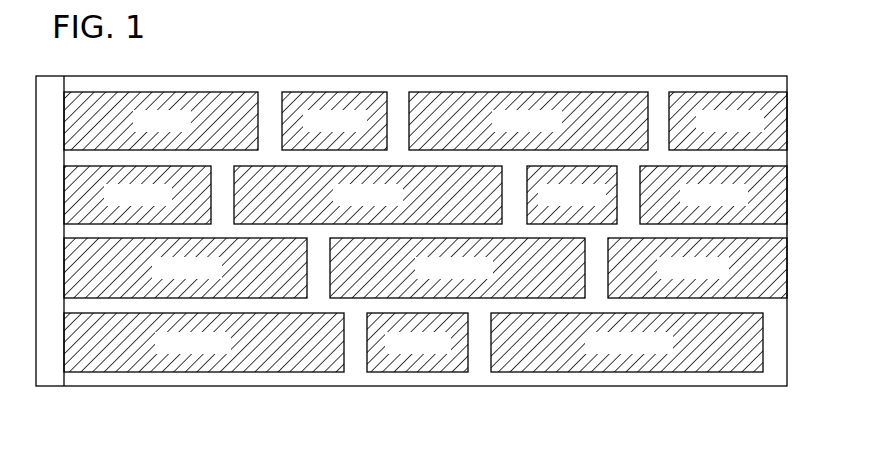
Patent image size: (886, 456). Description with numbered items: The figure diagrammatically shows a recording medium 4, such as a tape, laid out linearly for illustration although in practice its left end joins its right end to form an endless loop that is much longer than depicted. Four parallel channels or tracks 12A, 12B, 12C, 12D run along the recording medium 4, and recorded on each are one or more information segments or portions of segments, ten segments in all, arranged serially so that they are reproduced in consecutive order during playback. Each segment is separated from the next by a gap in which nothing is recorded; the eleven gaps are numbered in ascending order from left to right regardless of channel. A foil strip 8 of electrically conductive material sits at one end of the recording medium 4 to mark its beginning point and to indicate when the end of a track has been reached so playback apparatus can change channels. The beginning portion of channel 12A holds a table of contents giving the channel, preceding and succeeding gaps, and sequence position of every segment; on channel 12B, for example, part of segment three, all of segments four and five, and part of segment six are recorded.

The recording medium 4 is at (495, 76).
The foil strip 8 is at (49, 387).
The channel 12A is at (787, 128).
The channel 12B is at (787, 201).
The channel 12C is at (787, 275).
The channel 12D is at (787, 350).